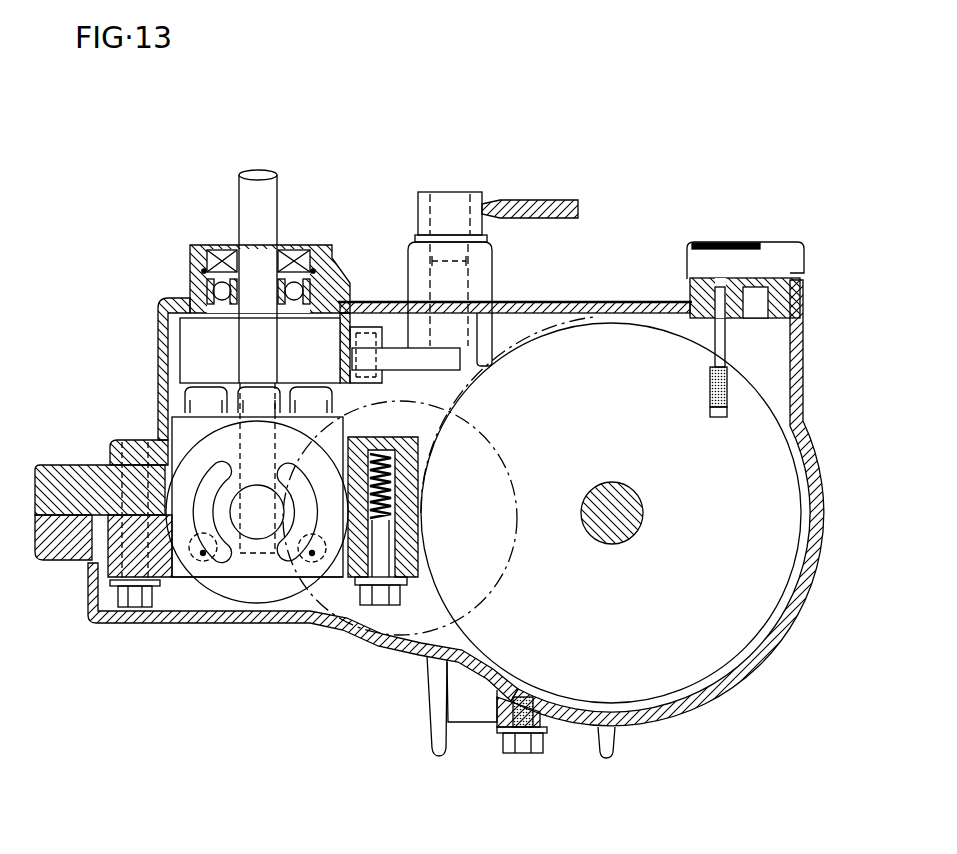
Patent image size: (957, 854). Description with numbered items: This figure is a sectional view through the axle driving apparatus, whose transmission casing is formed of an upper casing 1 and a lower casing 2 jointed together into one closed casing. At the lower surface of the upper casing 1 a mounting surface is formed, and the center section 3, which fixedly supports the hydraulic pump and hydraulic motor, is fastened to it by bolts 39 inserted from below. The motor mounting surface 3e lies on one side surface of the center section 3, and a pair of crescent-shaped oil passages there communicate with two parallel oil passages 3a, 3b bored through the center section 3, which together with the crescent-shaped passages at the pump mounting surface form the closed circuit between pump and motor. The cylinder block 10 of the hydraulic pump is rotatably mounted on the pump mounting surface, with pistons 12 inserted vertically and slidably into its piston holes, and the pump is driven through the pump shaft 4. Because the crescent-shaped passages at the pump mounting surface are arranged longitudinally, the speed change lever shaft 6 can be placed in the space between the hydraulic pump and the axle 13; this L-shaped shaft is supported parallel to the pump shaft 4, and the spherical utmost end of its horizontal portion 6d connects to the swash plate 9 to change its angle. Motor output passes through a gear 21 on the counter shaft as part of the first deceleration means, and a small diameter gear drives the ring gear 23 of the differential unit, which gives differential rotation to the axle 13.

The upper casing 1 is at (610, 302).
The lower casing 2 is at (240, 612).
The center section 3 is at (183, 600).
The oil passage 3a is at (333, 417).
The oil passage 3b is at (203, 562).
The motor mounting surface 3e is at (261, 601).
The pump shaft 4 is at (277, 192).
The speed change lever shaft 6 is at (472, 280).
The horizontal portion 6d is at (398, 326).
The swash plate 9 is at (166, 350).
The cylinder block 10 is at (158, 428).
The pistons 12 is at (180, 398).
The axle 13 is at (644, 501).
The gear 21 is at (490, 443).
The ring gear 23 is at (529, 338).
The bolts 39 is at (160, 606).